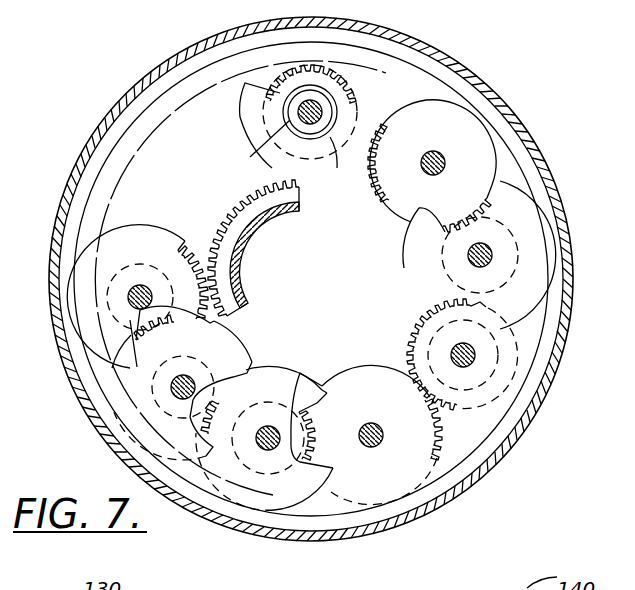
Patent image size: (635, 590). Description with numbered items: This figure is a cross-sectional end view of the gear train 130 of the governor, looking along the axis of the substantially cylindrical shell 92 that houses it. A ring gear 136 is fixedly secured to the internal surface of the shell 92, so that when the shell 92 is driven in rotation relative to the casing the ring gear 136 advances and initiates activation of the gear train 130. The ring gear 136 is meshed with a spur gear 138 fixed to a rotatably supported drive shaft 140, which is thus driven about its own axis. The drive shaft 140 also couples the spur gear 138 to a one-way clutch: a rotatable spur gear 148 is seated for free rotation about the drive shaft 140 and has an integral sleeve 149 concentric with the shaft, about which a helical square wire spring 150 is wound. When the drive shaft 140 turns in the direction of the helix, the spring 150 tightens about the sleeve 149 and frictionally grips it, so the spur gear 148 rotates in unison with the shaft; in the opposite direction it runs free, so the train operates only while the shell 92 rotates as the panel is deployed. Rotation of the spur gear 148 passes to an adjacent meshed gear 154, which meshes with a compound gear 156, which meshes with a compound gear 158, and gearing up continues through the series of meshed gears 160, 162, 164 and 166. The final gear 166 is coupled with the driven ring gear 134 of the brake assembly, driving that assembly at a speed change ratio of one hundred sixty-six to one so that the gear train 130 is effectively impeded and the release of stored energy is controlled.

The shell 92 is at (540, 157).
The gear train 130 is at (492, 408).
The driven ring gear 134 is at (255, 202).
The ring gear 136 is at (330, 66).
The spur gear 138 is at (285, 106).
The drive shaft 140 is at (298, 114).
The rotatable spur gear 148 is at (464, 126).
The sleeve 149 is at (263, 153).
The helical square wire spring 150 is at (303, 147).
The gear 154 is at (447, 100).
The compound gear 156 is at (540, 230).
The compound gear 158 is at (517, 372).
The gear 160 is at (410, 470).
The gear 162 is at (260, 500).
The gear 164 is at (127, 418).
The gear 166 is at (83, 322).